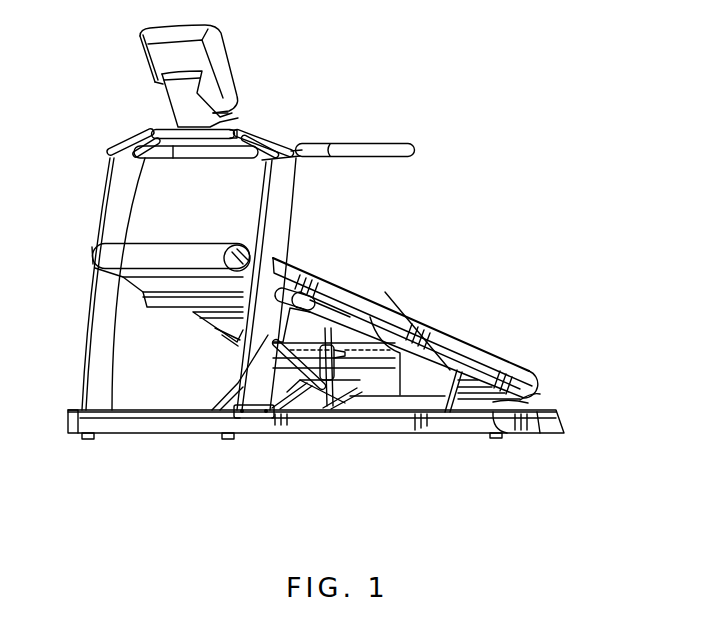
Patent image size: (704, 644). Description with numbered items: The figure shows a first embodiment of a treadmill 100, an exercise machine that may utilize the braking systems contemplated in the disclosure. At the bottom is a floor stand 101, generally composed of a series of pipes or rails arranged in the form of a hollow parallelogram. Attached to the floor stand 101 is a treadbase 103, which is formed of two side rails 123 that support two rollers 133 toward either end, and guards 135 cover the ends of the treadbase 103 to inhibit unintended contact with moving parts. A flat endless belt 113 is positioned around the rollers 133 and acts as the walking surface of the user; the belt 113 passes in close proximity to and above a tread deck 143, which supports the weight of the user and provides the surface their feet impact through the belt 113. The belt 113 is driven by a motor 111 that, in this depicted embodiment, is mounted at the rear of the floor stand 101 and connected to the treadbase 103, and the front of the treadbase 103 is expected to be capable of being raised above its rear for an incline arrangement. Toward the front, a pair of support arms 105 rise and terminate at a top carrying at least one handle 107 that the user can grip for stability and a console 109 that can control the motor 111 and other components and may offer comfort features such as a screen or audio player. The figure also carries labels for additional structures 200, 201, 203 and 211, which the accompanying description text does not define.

The treadmill 100 is at (545, 111).
The floor stand 101 is at (480, 427).
The treadbase 103 is at (467, 353).
The support arms 105 is at (282, 207).
The handle 107 is at (383, 146).
The console 109 is at (223, 66).
The motor 111 is at (500, 397).
The endless belt 113 is at (360, 291).
The side rails 123 is at (408, 330).
The rollers 133 is at (203, 286).
The guards 135 is at (110, 257).
The tread deck 143 is at (322, 332).
The lift mechanism 200 is at (213, 362).
The lift arm 201 is at (303, 390).
The support strut 203 is at (223, 410).
The bracket 211 is at (204, 318).